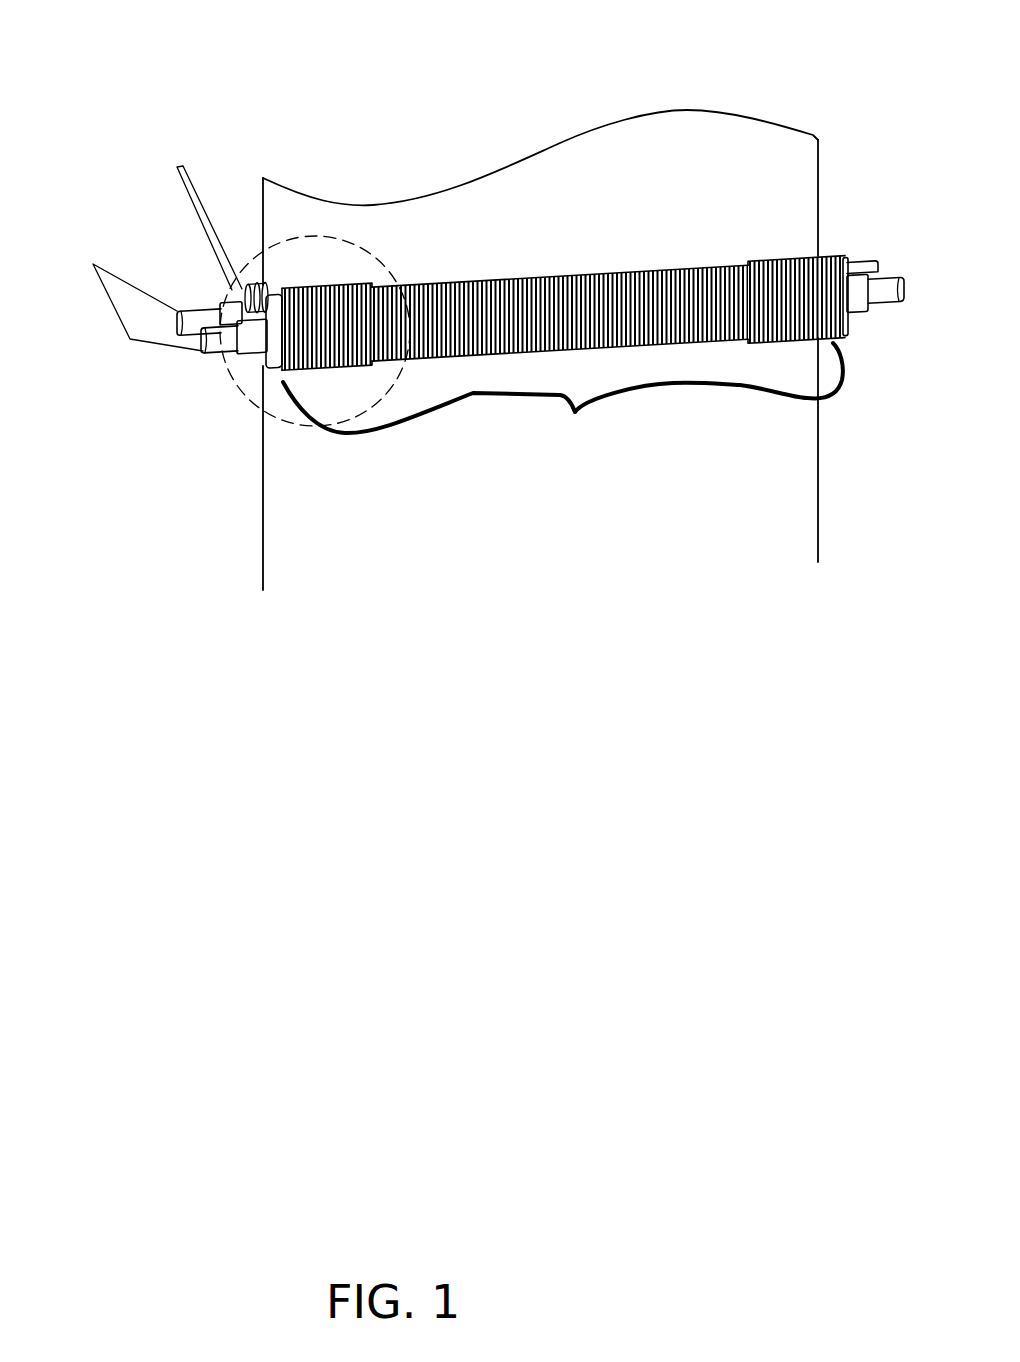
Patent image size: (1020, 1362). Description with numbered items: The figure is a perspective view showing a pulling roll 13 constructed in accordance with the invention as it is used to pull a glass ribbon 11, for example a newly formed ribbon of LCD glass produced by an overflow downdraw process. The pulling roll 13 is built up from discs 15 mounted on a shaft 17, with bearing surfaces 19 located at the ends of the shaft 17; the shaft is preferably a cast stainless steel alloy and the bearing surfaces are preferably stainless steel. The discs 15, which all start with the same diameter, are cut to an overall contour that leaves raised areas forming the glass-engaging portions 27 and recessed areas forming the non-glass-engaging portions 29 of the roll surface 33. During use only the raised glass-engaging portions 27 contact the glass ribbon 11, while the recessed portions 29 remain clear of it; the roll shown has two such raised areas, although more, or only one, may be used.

The glass ribbon 11 is at (687, 177).
The pulling roll 13 is at (513, 262).
The disc 15 is at (428, 330).
The shaft 17 is at (93, 264).
The bearing surface 19 is at (177, 166).
The glass-engaging portions of roll surface 27 is at (326, 287).
The non-glass-engaging portions of roll surface 29 is at (578, 274).
The roll surface 33 is at (577, 412).